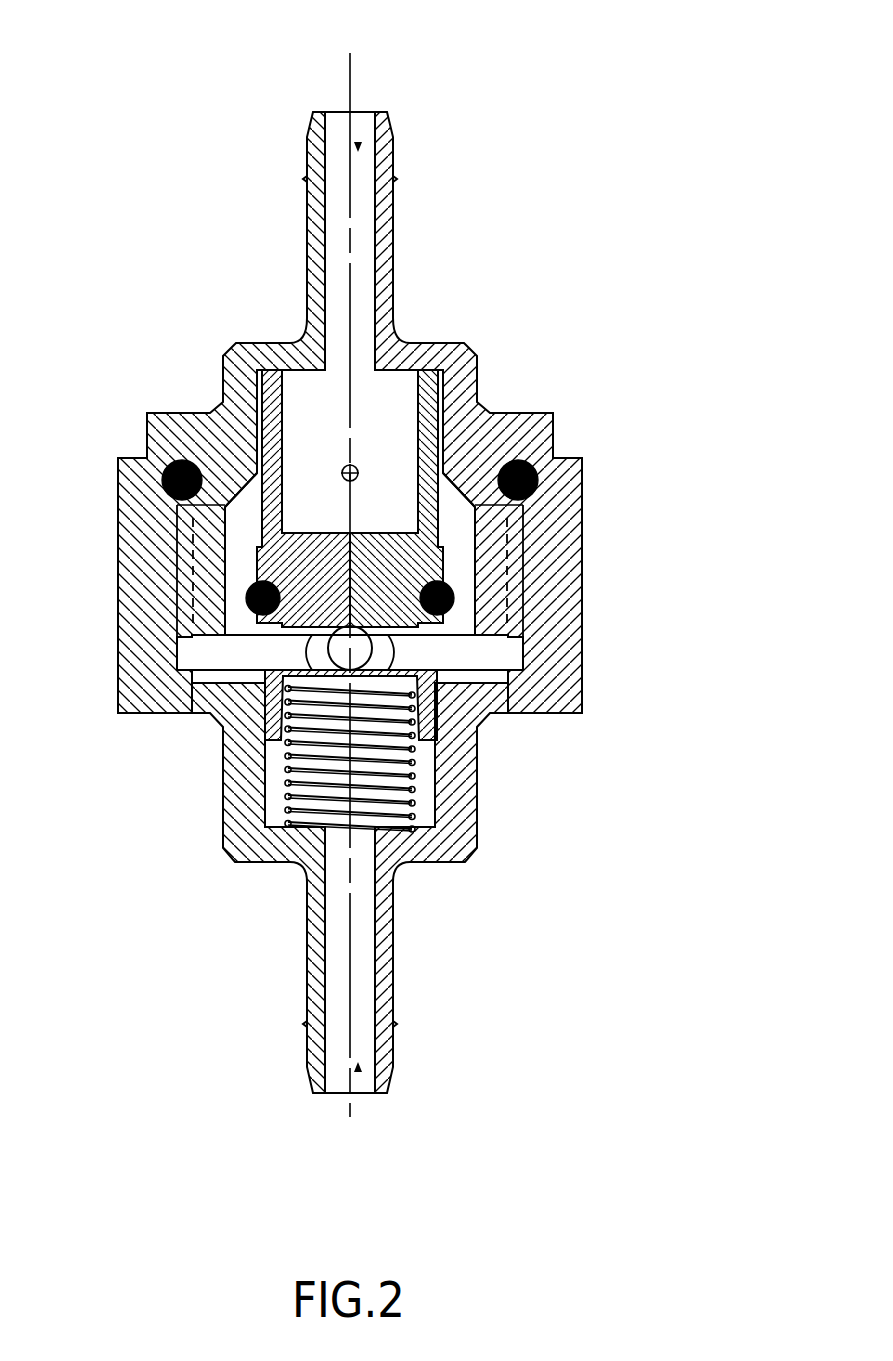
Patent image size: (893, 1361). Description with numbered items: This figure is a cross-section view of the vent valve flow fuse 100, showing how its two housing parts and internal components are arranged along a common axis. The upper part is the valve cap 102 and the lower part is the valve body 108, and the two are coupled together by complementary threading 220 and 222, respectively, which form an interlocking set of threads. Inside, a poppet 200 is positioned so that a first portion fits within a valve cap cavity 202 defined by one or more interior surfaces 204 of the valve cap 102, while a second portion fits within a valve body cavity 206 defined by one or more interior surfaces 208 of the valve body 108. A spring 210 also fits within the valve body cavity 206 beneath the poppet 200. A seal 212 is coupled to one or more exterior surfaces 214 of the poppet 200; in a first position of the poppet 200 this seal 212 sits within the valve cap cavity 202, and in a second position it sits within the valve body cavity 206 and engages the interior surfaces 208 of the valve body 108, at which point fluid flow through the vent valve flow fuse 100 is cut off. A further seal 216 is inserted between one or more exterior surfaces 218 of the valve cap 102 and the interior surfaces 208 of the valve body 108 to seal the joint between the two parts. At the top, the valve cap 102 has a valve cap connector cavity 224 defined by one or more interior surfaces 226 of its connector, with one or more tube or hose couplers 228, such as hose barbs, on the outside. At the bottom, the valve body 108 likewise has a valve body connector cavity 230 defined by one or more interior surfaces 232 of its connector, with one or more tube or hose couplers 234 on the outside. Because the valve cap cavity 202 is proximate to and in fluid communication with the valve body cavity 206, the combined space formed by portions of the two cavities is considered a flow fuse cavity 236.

The vent valve flow fuse 100 is at (155, 42).
The valve cap 102 is at (158, 160).
The valve body 108 is at (158, 909).
The poppet 200 is at (438, 382).
The valve cap cavity 202 is at (458, 528).
The interior surfaces of the valve cap 204 is at (460, 488).
The valve body cavity 206 is at (425, 778).
The interior surfaces of the valve body 208 is at (437, 795).
The spring 210 is at (413, 818).
The seal 212 is at (255, 603).
The exterior surfaces of the poppet 214 is at (444, 568).
The seal 216 is at (160, 483).
The exterior surfaces of the valve cap 218 is at (505, 447).
The threading 220 is at (177, 537).
The threading 222 is at (193, 567).
The valve cap connector cavity 224 is at (358, 148).
The interior surfaces of the valve cap connector 226 is at (380, 163).
The tube or hose couplers 228 is at (303, 178).
The valve body connector cavity 230 is at (358, 1066).
The interior surfaces of the valve body connector 232 is at (377, 982).
The tube or hose couplers 234 is at (303, 1026).
The flow fuse cavity 236 is at (488, 652).